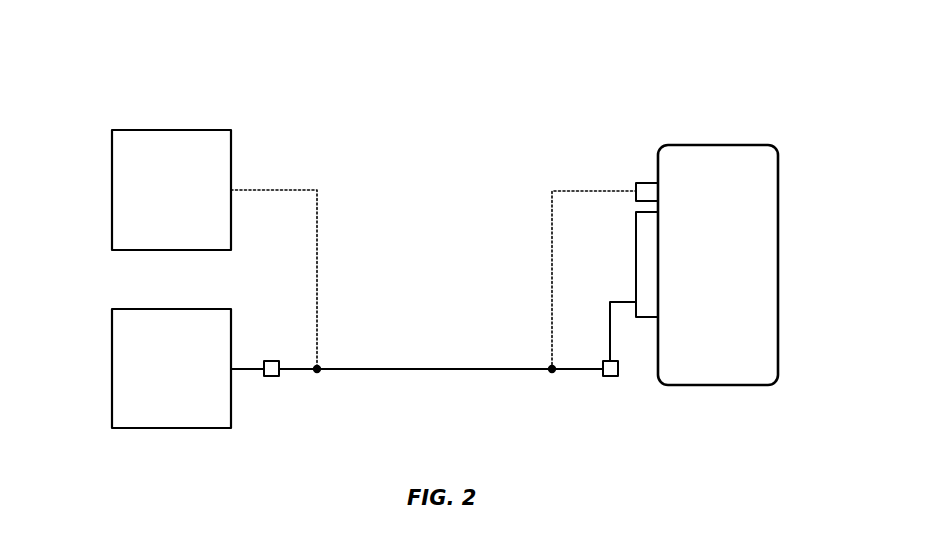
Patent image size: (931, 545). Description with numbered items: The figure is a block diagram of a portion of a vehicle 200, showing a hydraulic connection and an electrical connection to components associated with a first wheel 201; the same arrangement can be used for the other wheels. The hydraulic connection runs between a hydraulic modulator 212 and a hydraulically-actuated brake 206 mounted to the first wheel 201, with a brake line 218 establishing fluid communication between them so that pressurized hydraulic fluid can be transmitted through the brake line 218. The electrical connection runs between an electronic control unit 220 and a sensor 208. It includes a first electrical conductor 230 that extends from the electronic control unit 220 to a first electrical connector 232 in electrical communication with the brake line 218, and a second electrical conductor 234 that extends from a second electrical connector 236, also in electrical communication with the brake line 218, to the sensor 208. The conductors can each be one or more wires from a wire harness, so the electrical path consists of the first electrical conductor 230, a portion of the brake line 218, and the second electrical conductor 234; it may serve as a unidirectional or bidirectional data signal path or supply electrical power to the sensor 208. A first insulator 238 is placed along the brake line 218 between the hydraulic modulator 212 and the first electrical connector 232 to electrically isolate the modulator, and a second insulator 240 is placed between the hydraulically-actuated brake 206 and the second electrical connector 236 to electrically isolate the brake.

The vehicle 200 is at (128, 102).
The first wheel 201 is at (738, 145).
The hydraulically-actuated brake 206 is at (637, 241).
The sensor 208 is at (638, 183).
The hydraulic modulator 212 is at (171, 368).
The brake line 218 is at (400, 369).
The electronic control unit 220 is at (171, 190).
The first electrical conductor 230 is at (293, 190).
The first electrical connector 232 is at (319, 373).
The second electrical conductor 234 is at (552, 190).
The second electrical connector 236 is at (550, 373).
The first insulator 238 is at (275, 377).
The second insulator 240 is at (612, 377).